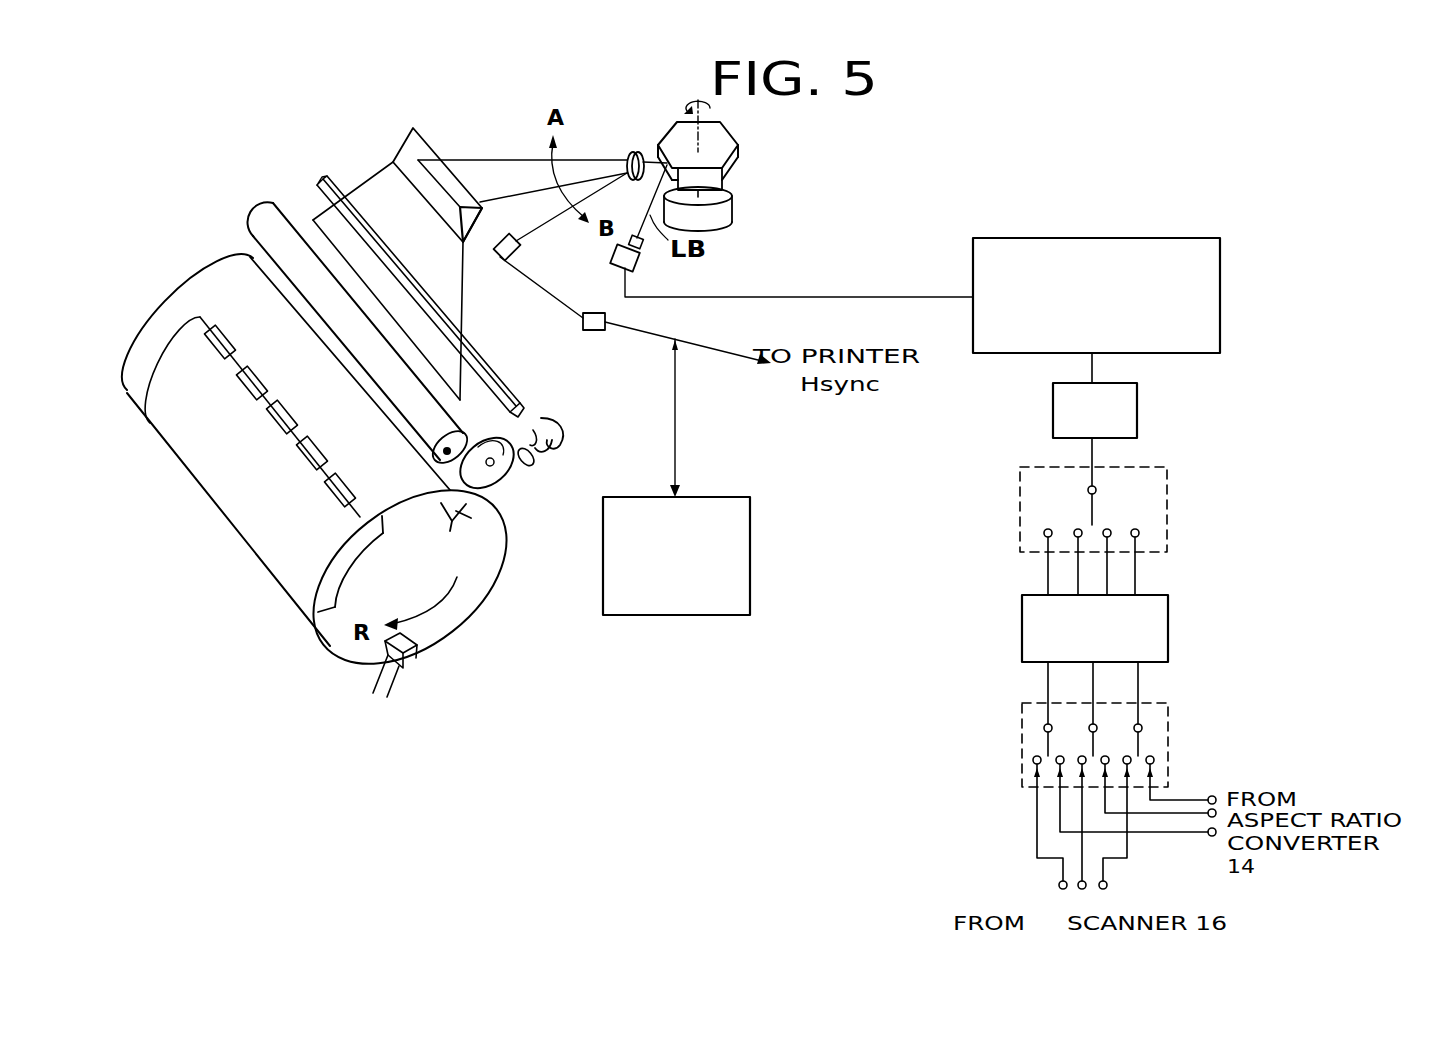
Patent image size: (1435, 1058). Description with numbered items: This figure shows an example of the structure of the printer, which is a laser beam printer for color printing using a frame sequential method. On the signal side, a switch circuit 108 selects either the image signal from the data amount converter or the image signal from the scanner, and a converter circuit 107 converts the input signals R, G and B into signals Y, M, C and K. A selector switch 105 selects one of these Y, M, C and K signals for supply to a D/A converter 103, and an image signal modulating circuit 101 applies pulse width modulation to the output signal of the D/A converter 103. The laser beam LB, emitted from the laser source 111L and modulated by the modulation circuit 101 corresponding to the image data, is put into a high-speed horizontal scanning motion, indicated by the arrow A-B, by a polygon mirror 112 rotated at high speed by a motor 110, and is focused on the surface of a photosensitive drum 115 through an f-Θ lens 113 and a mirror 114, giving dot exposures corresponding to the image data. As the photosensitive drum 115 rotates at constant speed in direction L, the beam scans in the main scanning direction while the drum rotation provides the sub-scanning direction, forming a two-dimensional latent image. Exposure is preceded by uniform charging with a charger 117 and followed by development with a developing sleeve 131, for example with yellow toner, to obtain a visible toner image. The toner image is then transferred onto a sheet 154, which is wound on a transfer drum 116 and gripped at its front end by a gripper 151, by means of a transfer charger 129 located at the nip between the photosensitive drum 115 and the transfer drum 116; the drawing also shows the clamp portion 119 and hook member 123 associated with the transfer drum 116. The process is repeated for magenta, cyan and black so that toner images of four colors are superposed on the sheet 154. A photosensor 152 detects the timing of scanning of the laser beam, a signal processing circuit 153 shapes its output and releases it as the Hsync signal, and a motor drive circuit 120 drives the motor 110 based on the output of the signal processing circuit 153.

The image signal modulating circuit 101 is at (1221, 250).
The D/A converter 103 is at (1137, 412).
The selector switch 105 is at (1167, 500).
The converter circuit 107 is at (1168, 625).
The switch circuit 108 is at (1168, 725).
The motor 110 is at (732, 214).
The semiconductor laser 111L is at (640, 266).
The polygon mirror 112 is at (738, 152).
The f-Θ lens 113 is at (632, 155).
The mirror 114 is at (425, 138).
The photosensitive drum 115 is at (505, 490).
The transfer drum 116 is at (486, 612).
The charger 117 is at (518, 396).
The sheet clamp 119 is at (373, 565).
The motor drive circuit 120 is at (750, 520).
The hook member 123 is at (545, 452).
The transfer charger 129 is at (450, 531).
The developing sleeve 131 is at (253, 210).
The gripper 151 is at (227, 332).
The photosensor 152 is at (500, 258).
The signal processing circuit 153 is at (596, 331).
The sheet 154 is at (212, 497).